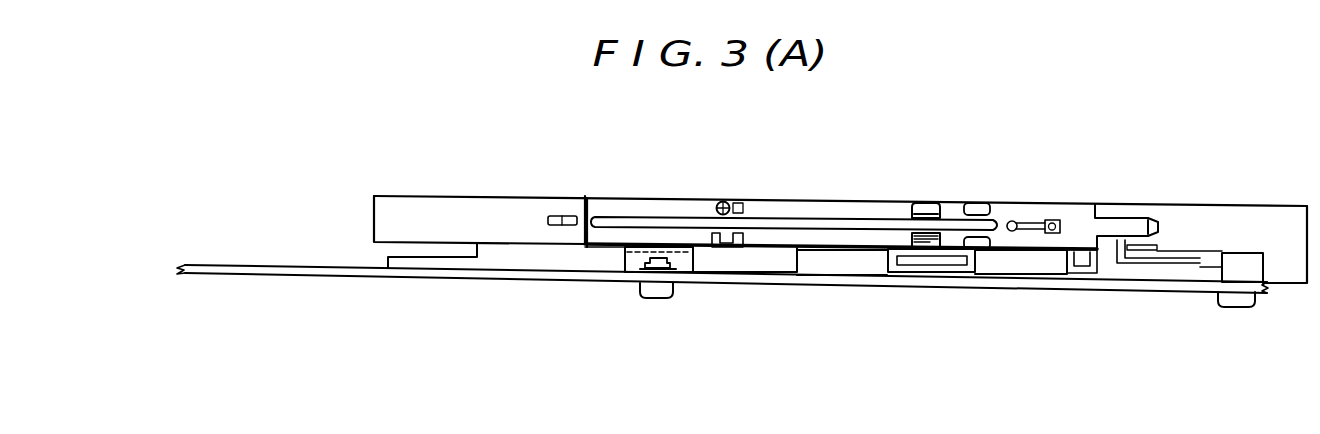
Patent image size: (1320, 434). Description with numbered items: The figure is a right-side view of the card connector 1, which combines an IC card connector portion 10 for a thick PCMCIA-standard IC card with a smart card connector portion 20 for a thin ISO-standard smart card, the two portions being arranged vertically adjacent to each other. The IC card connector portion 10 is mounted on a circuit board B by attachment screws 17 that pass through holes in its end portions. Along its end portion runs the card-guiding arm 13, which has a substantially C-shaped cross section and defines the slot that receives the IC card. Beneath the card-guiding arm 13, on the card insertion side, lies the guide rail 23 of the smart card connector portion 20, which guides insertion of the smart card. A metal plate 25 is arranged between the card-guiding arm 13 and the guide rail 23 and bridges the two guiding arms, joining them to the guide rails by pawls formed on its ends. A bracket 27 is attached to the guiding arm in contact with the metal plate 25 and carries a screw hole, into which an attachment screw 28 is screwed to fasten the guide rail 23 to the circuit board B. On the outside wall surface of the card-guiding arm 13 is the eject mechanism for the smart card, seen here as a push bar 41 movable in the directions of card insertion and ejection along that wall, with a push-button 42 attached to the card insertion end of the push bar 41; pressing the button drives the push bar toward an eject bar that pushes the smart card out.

The card connector 1 is at (1058, 185).
The IC card connector portion 10 is at (1260, 220).
The card-guiding arm 13 is at (930, 203).
The attachment screw 17 is at (1240, 308).
The smart card connector portion 20 is at (1018, 270).
The guide rail 23 is at (610, 262).
The metal plate 25 is at (596, 248).
The bracket 27 is at (685, 263).
The attachment screw 28 is at (663, 298).
The push bar 41 is at (798, 215).
The push-button 42 is at (473, 207).
The circuit board B is at (287, 266).